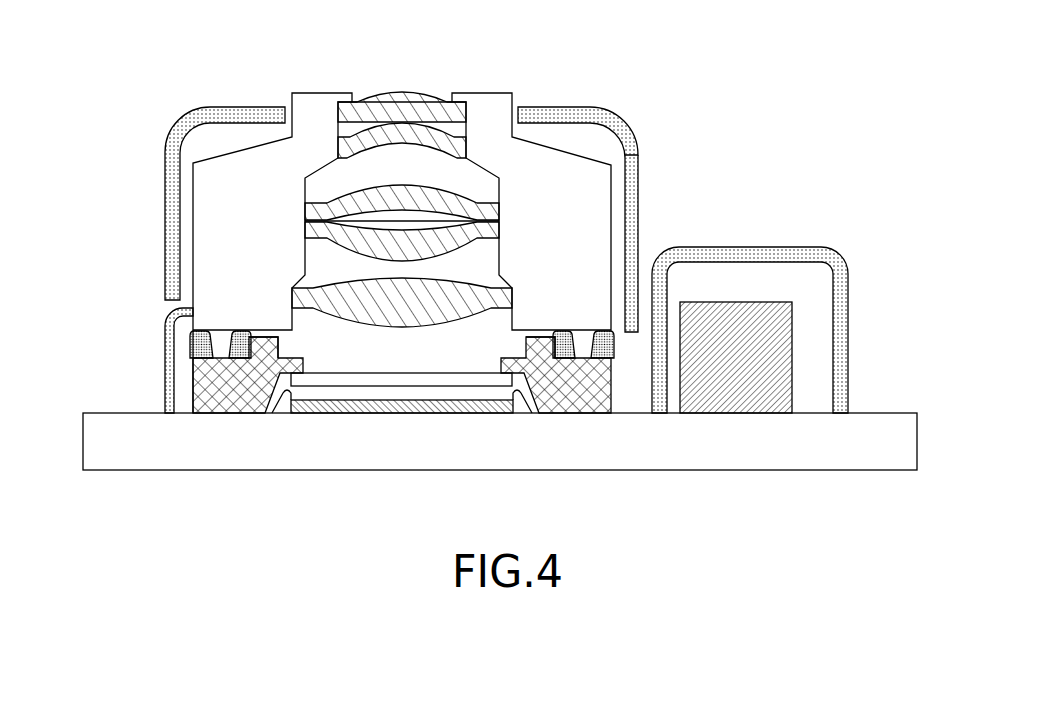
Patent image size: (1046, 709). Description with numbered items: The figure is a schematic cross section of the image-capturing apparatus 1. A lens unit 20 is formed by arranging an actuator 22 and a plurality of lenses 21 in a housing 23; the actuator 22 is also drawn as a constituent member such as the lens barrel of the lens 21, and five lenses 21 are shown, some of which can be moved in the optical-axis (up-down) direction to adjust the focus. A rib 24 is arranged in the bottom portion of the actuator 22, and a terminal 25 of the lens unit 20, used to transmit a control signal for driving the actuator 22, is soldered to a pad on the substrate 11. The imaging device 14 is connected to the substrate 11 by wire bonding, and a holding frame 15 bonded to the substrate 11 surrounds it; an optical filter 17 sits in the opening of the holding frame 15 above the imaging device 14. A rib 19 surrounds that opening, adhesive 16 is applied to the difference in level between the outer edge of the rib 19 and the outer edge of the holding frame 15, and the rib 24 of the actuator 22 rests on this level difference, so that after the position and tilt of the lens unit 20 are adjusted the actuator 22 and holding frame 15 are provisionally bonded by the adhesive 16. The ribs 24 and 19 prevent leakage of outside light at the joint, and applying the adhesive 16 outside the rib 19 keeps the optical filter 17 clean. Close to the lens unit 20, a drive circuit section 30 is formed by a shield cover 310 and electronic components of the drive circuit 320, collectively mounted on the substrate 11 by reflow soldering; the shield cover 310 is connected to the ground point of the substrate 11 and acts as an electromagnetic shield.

The image-capturing apparatus 1 is at (862, 82).
The substrate 11 is at (577, 470).
The imaging device 14 is at (398, 413).
The holding frame 15 is at (193, 392).
The adhesive 16 is at (190, 340).
The optical filter 17 is at (463, 372).
The rib 19 is at (283, 350).
The lens unit 20 is at (629, 100).
The lens 21 is at (407, 91).
The actuator 22 is at (640, 172).
The housing 23 is at (553, 108).
The rib 24 is at (218, 342).
The terminal 25 is at (163, 313).
The drive circuit section 30 is at (851, 242).
The shield cover 310 is at (752, 247).
The electronic components of the drive circuit 320 is at (800, 309).